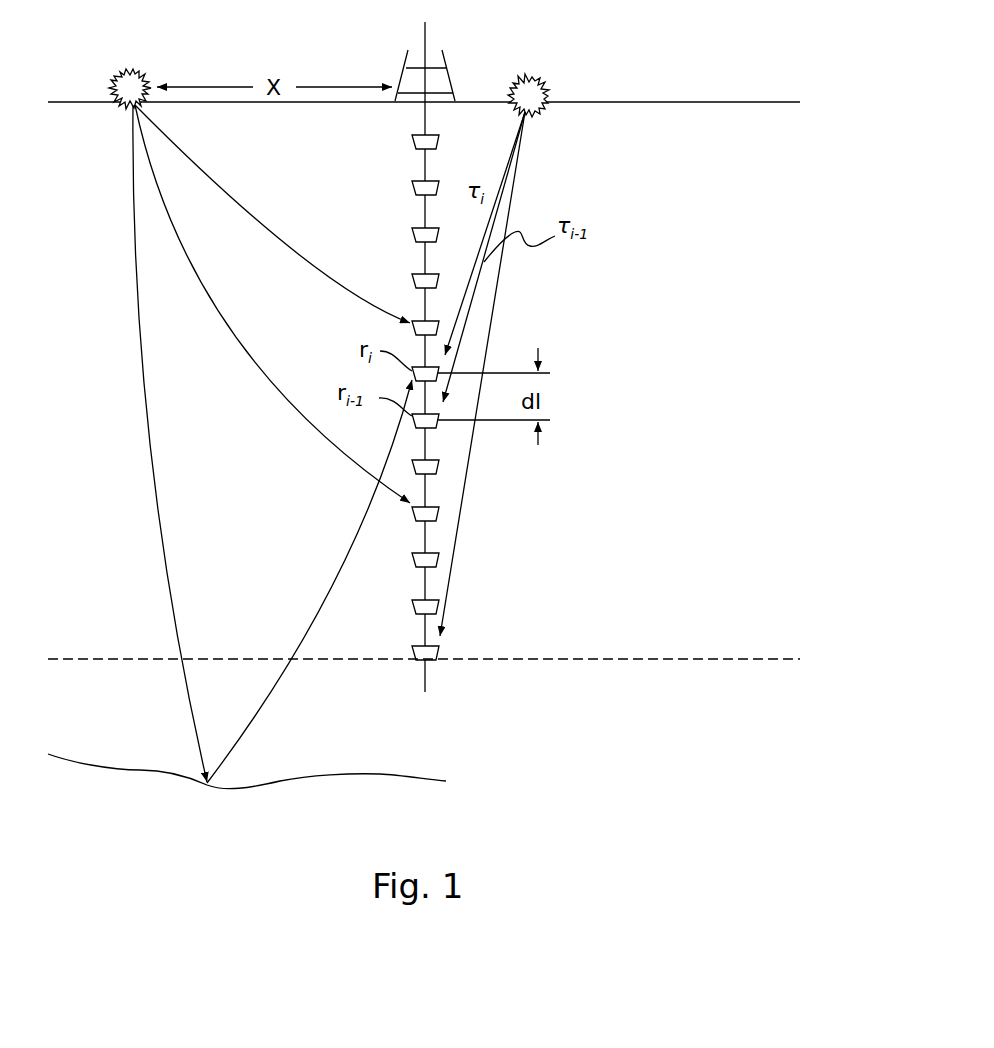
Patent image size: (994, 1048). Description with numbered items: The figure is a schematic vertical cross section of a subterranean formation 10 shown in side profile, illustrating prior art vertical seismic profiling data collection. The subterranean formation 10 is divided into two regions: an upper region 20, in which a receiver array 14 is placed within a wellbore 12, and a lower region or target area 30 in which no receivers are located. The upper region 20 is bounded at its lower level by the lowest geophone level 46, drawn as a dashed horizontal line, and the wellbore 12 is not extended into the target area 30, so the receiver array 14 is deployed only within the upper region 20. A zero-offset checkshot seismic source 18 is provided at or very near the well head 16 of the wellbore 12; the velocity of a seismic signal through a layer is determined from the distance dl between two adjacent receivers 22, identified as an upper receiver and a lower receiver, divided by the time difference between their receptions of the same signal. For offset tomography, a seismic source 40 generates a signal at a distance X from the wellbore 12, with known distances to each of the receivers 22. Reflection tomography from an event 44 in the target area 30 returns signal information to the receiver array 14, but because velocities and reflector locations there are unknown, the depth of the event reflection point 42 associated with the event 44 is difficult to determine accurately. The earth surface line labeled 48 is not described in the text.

The subterranean formation 10 is at (768, 73).
The wellbore 12 is at (425, 121).
The receiver array 14 is at (388, 215).
The well head 16 is at (406, 63).
The zero-offset checkshot seismic source 18 is at (547, 89).
The upper region 20 is at (697, 304).
The receivers 22 is at (415, 316).
The target area 30 is at (439, 752).
The seismic source 40 is at (118, 80).
The event reflection point 42 is at (208, 781).
The event 44 is at (121, 768).
The lowest geophone level 46 is at (123, 658).
The earth surface 48 is at (712, 100).